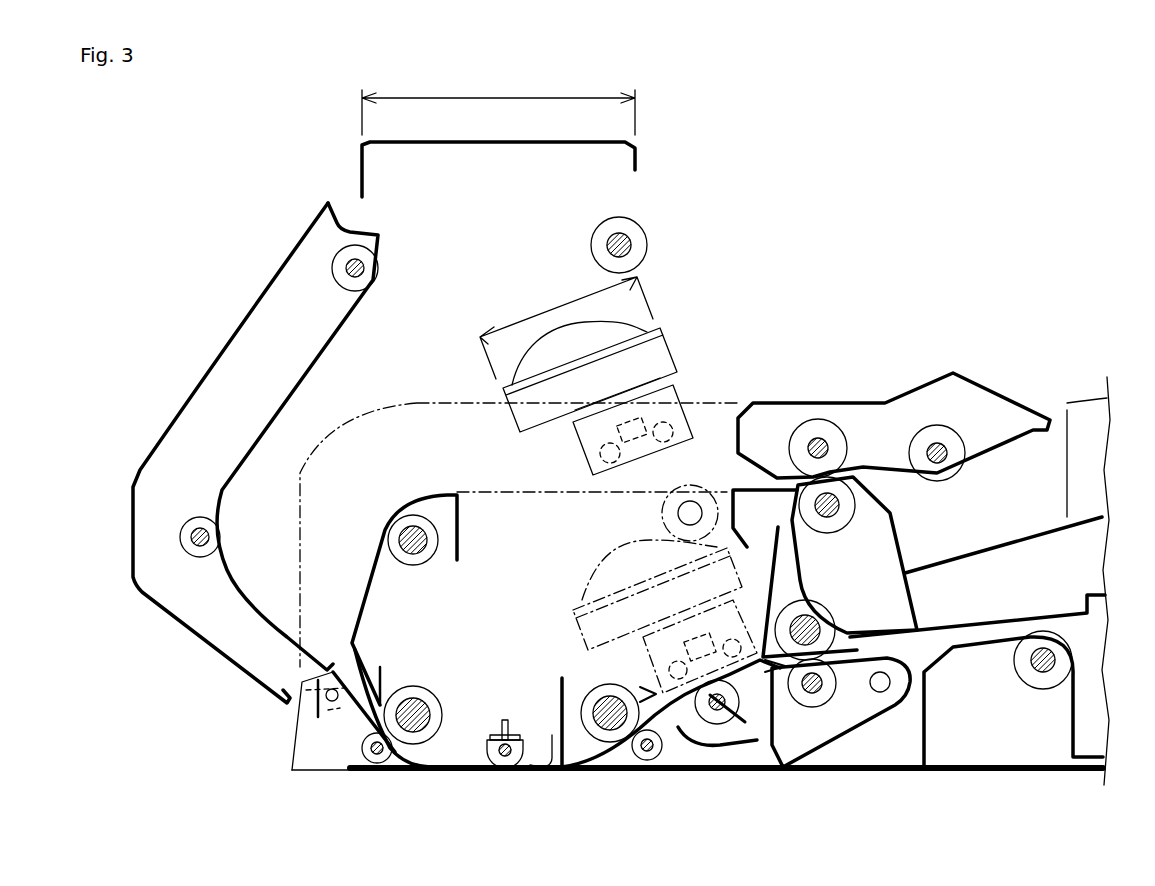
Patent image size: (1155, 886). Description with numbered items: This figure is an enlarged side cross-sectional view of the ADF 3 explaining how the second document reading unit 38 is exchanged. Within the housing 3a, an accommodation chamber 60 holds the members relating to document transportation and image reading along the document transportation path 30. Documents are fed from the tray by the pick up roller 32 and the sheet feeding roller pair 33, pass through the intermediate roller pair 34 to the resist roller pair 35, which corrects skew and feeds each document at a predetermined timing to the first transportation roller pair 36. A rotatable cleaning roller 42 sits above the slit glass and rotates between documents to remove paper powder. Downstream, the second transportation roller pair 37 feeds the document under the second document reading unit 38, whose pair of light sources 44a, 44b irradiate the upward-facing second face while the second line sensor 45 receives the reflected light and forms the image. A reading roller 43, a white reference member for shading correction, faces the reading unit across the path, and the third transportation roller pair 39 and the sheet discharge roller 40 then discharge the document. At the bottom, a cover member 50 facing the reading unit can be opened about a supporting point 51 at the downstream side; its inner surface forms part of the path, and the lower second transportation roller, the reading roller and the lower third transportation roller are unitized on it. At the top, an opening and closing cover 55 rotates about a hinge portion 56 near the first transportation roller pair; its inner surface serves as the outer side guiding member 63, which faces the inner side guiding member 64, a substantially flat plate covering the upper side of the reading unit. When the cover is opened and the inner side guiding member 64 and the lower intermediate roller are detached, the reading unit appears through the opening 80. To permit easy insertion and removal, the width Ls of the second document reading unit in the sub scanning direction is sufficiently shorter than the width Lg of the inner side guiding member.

The ADF 3 is at (203, 695).
The housing 3a is at (908, 384).
The document transportation path 30 is at (768, 672).
The pick up roller 32 is at (948, 443).
The sheet feeding roller pair 33 is at (818, 435).
The intermediate roller pair 34 is at (636, 225).
The resist roller pair 35 is at (420, 515).
The first transportation roller pair 36 is at (425, 748).
The second transportation roller pair 37 is at (600, 742).
The second document reading unit 38 is at (661, 355).
The third transportation roller pair 39 is at (833, 612).
The sheet discharge roller 40 is at (1040, 690).
The cleaning roller 42 is at (505, 770).
The reading roller 43 is at (712, 727).
The light source 44a is at (600, 452).
The light source 44b is at (675, 428).
The second line sensor 45 is at (673, 416).
The cover member 50 is at (828, 740).
The supporting point 51 is at (882, 692).
The opening and closing cover 55 is at (210, 362).
The hinge portion 56 is at (325, 700).
The accommodation chamber 60 is at (424, 605).
The outer side guiding member 63 is at (325, 356).
The inner side guiding member 64 is at (524, 147).
The opening 80 is at (485, 504).
The width of the inner side guiding member Lg is at (498, 95).
The width of the second document reading unit Ls is at (557, 314).